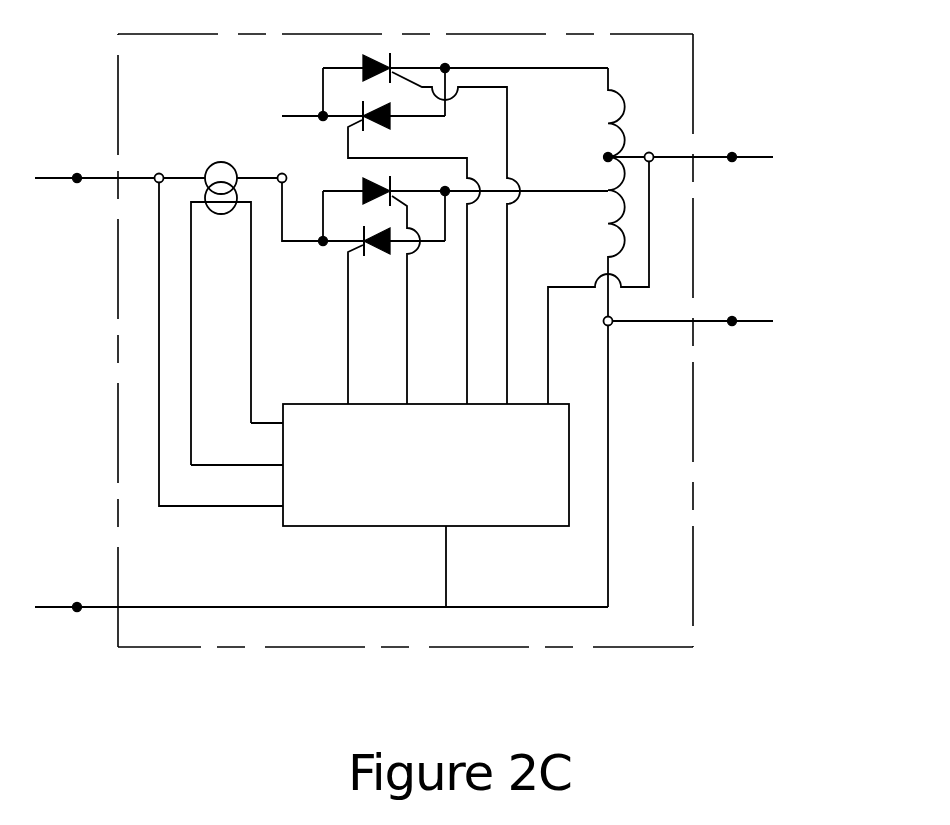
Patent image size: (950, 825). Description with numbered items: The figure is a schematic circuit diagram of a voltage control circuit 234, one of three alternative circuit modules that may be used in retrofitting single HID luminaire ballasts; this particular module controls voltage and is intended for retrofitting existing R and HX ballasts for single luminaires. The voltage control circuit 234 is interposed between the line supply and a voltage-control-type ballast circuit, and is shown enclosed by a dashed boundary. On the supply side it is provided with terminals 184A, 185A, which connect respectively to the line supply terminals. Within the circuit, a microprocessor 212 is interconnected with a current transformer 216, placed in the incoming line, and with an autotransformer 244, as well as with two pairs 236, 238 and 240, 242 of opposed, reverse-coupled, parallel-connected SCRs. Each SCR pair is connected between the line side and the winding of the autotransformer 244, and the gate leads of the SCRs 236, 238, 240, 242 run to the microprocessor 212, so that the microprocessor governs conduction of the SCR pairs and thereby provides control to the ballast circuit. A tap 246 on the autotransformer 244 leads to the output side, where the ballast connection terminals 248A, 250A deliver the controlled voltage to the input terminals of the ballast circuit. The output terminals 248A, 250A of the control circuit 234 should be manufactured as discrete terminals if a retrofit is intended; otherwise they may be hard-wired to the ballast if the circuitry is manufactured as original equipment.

The terminal 184A is at (116, 160).
The terminal 185A is at (318, 590).
The current transformer 216 is at (210, 166).
The SCR 236 is at (363, 55).
The SCR 238 is at (392, 128).
The SCR 240 is at (363, 187).
The SCR 242 is at (383, 253).
The autotransformer 244 is at (622, 137).
The winding tap 246 is at (604, 157).
The ballast connection terminal 248A is at (751, 161).
The ballast connection terminal 250A is at (731, 323).
The voltage control circuit 234 is at (695, 440).
The microprocessor 212 is at (337, 527).